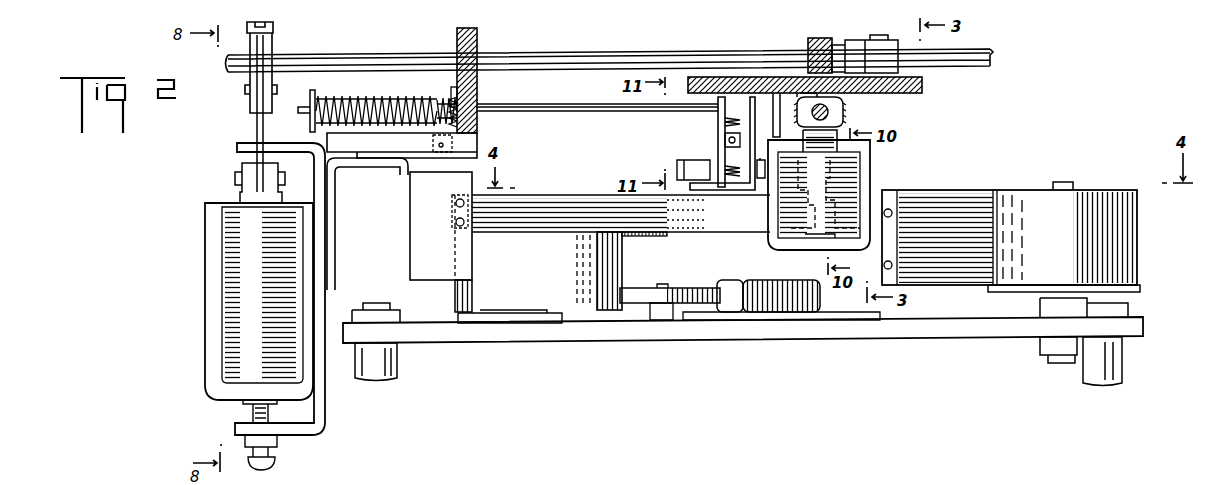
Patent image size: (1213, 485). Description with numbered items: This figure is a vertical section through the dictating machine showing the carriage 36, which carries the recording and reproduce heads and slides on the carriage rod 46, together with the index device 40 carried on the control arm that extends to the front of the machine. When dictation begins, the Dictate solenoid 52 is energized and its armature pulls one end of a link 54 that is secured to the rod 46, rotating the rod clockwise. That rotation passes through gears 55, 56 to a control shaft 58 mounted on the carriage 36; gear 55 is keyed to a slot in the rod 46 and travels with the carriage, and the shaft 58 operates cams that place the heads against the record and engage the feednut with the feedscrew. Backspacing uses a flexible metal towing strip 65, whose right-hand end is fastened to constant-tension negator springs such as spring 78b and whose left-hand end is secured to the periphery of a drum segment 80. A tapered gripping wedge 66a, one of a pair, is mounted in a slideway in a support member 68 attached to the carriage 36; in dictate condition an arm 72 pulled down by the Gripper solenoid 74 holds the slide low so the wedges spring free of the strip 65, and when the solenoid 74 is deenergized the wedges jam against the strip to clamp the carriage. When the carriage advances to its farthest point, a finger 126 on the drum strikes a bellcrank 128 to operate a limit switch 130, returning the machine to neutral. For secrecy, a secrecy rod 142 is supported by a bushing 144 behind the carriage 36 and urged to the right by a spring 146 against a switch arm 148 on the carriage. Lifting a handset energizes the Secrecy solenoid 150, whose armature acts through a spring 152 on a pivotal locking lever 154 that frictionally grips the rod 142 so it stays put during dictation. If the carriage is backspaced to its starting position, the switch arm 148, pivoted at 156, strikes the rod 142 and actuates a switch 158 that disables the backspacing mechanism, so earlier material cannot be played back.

The carriage 36 is at (923, 84).
The index device 40 is at (491, 478).
The carriage rod 46 is at (328, 63).
The Dictate solenoid 52 is at (245, 275).
The link 54 is at (262, 48).
The gear 55 is at (818, 40).
The gear 56 is at (832, 95).
The control shaft 58 is at (843, 115).
The towing strip 65 is at (552, 213).
The gripping wedge 66a is at (813, 225).
The support member 68 is at (783, 210).
The arm 72 is at (822, 140).
The Gripper solenoid 74 is at (843, 180).
The negator spring 78b is at (1118, 228).
The drum segment 80 is at (488, 293).
The finger 126 is at (617, 270).
The bellcrank 128 is at (698, 297).
The limit switch 130 is at (768, 288).
The secrecy rod 142 is at (302, 113).
The bushing 144 is at (423, 93).
The spring 146 is at (377, 93).
The switch arm 148 is at (715, 113).
The Secrecy solenoid 150 is at (415, 252).
The spring 152 is at (476, 125).
The locking lever 154 is at (477, 92).
The pivot 156 is at (723, 142).
The switch 158 is at (698, 170).